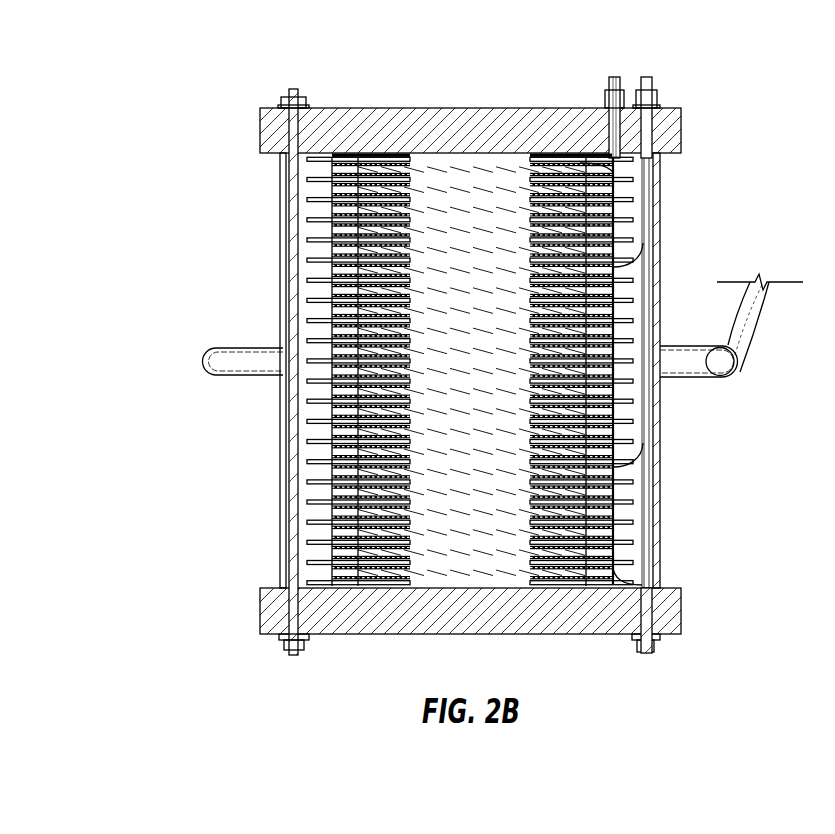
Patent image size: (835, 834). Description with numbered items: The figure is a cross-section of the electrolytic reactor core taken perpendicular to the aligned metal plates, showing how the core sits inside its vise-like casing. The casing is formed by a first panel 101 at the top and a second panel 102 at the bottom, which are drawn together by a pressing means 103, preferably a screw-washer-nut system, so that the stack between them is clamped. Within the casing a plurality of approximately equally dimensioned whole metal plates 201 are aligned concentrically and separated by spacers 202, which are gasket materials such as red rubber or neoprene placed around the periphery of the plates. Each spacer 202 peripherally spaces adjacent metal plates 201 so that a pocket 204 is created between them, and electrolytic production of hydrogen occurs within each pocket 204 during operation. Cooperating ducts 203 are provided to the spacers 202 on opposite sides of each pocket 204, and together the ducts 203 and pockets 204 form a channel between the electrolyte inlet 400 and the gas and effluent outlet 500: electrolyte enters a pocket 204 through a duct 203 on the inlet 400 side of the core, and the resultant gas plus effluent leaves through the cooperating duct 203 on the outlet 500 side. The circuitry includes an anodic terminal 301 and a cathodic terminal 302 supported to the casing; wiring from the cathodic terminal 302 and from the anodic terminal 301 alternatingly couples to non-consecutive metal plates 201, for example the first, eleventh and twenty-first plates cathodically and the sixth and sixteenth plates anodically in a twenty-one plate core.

The first panel 101 is at (268, 130).
The second panel 102 is at (566, 639).
The pressing means 103 is at (286, 586).
The metal plate 201 is at (415, 164).
The spacer 202 is at (353, 153).
The duct 203 is at (595, 158).
The pocket 204 is at (477, 180).
The anodic terminal 301 is at (655, 93).
The cathodic terminal 302 is at (615, 78).
The electrolyte inlet 400 is at (722, 378).
The gas and effluent outlet 500 is at (218, 375).